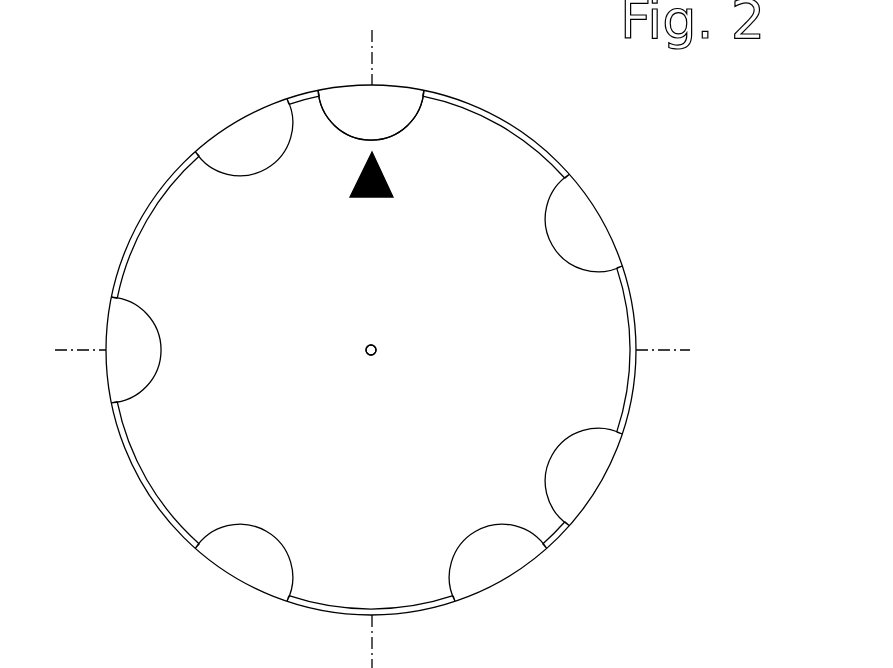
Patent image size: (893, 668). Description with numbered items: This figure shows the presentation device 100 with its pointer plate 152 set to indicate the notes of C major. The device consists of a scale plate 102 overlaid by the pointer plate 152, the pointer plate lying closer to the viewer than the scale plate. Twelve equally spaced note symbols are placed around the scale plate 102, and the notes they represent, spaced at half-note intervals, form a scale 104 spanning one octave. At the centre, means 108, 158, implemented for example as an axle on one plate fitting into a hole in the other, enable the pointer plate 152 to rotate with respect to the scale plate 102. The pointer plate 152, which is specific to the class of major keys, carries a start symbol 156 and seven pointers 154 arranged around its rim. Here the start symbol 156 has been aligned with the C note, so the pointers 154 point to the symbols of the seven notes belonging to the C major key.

The presentation device 100 is at (82, 125).
The scale plate 102 is at (152, 194).
The scale 104 is at (357, 98).
The means enabling rotation 108 is at (376, 355).
The pointer plate 152 is at (135, 238).
The pointers 154 is at (412, 121).
The start symbol 156 is at (372, 200).
The means enabling rotation 158 is at (405, 385).